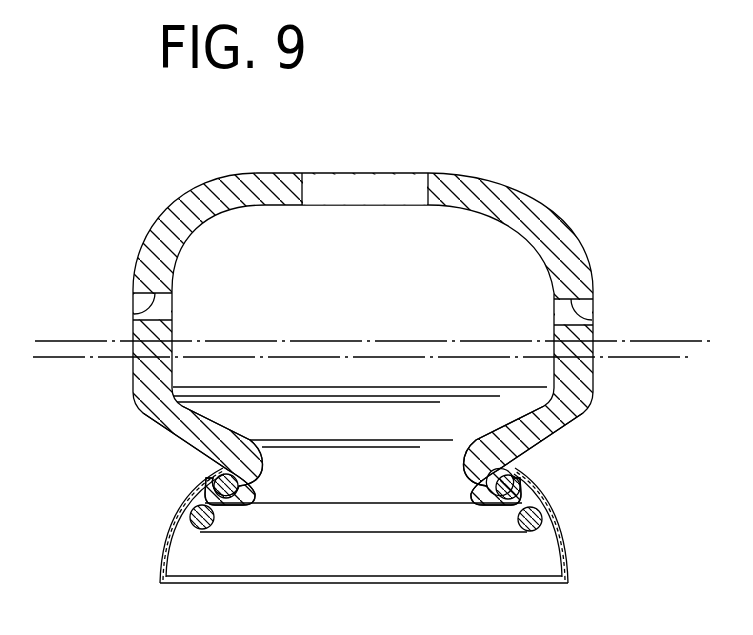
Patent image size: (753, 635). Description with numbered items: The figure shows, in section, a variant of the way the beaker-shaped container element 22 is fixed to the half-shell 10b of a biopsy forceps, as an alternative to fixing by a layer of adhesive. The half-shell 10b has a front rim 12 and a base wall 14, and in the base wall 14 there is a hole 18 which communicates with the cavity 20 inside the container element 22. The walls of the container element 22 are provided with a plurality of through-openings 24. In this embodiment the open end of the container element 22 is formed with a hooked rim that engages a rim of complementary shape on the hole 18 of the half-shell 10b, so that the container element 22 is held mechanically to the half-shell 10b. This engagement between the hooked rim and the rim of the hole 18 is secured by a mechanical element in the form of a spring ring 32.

The half-shell 10b is at (565, 507).
The front rim 12 is at (205, 584).
The base wall 14 is at (186, 504).
The hole 18 is at (236, 466).
The cavity 20 is at (432, 270).
The container element 22 is at (536, 194).
The through-openings 24 is at (133, 312).
The spring ring 32 is at (528, 528).